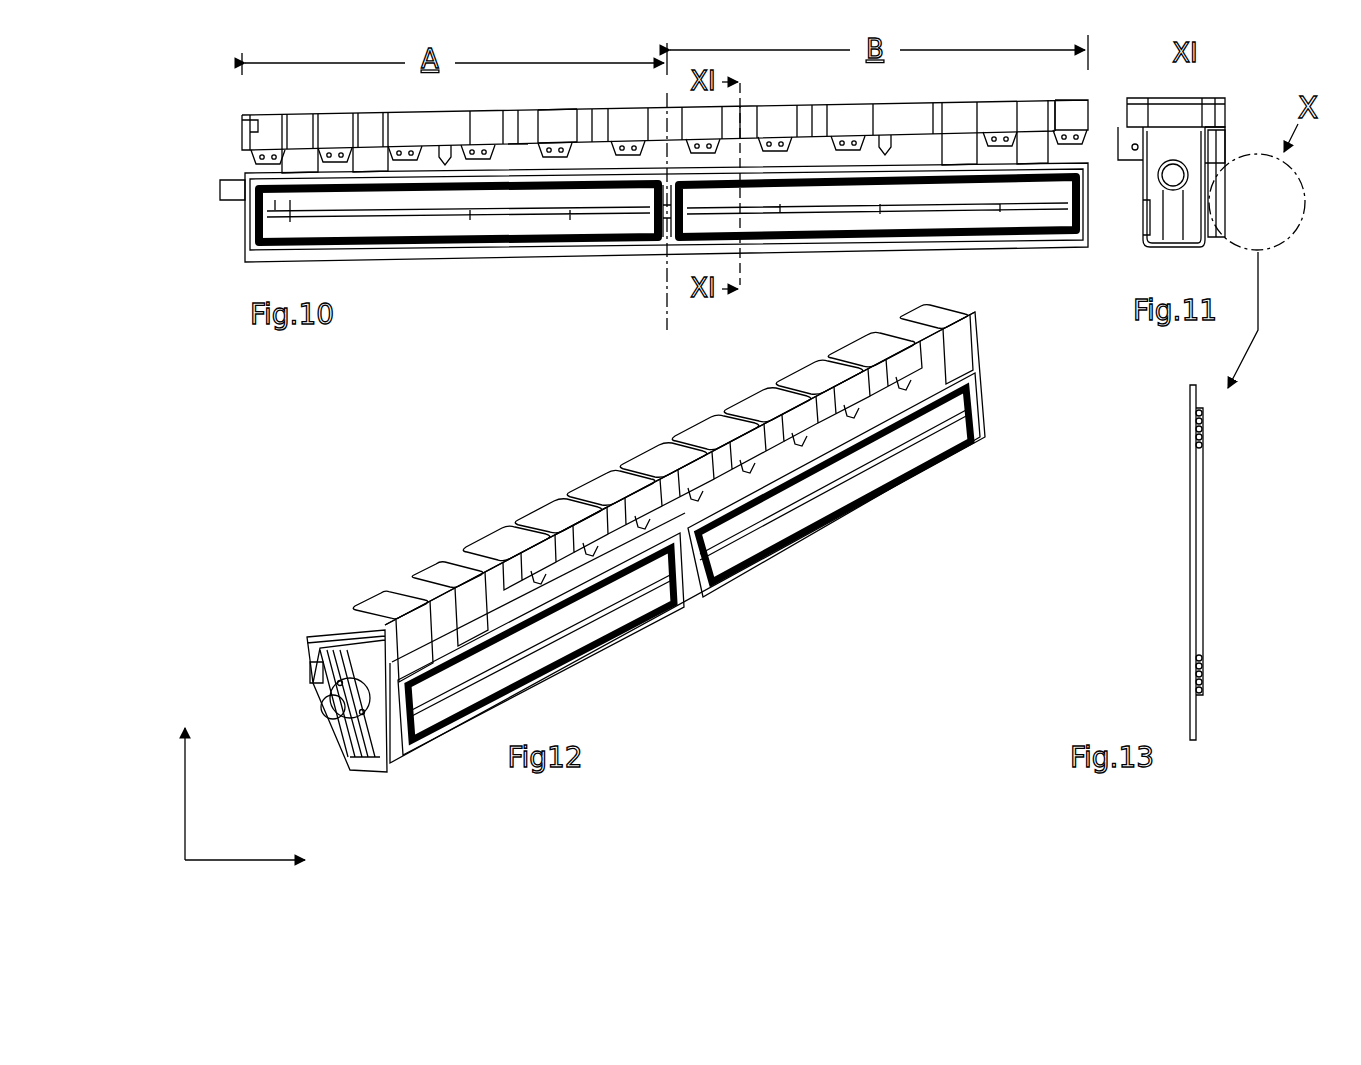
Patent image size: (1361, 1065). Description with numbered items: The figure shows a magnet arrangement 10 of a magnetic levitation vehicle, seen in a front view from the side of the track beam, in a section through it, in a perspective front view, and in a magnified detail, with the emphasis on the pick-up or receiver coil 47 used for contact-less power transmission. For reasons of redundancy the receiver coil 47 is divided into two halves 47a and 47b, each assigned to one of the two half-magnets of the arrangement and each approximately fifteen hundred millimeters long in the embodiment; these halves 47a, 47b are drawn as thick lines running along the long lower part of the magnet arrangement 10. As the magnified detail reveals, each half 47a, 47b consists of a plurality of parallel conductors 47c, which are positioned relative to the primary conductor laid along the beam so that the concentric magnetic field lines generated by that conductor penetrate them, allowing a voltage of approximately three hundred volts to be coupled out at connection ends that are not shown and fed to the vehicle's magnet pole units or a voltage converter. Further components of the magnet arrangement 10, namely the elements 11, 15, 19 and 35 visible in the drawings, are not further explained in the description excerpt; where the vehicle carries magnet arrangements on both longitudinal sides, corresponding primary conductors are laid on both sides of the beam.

In FIG. 10, the magnet arrangement 10 is at (396, 288).
In FIG. 11, the magnet arrangement 10 is at (1171, 172).
In FIG. 12, the magnet arrangement 10 is at (445, 522).
In FIG. 10, the module 11 is at (545, 125).
In FIG. 12, the module 11 is at (602, 478).
In FIG. 10, the connecting piece 15 is at (660, 244).
In FIG. 11, the connecting piece 15 is at (1153, 223).
In FIG. 10, the pillar / support block 19 is at (372, 130).
In FIG. 12, the pillar / support block 19 is at (368, 612).
In FIG. 10, the rib 35 is at (521, 163).
In FIG. 10, the receiver coil 47 is at (534, 246).
In FIG. 10, the first half of receiver coil 47a is at (465, 244).
In FIG. 12, the first half of receiver coil 47a is at (571, 663).
In FIG. 10, the second half of receiver coil 47b is at (992, 233).
In FIG. 11, the second half of receiver coil 47b is at (1234, 205).
In FIG. 13, the second half of receiver coil 47b is at (1210, 576).
In FIG. 12, the second half of receiver coil 47b is at (820, 519).
In FIG. 13, the parallel conductors 47c is at (1203, 685).